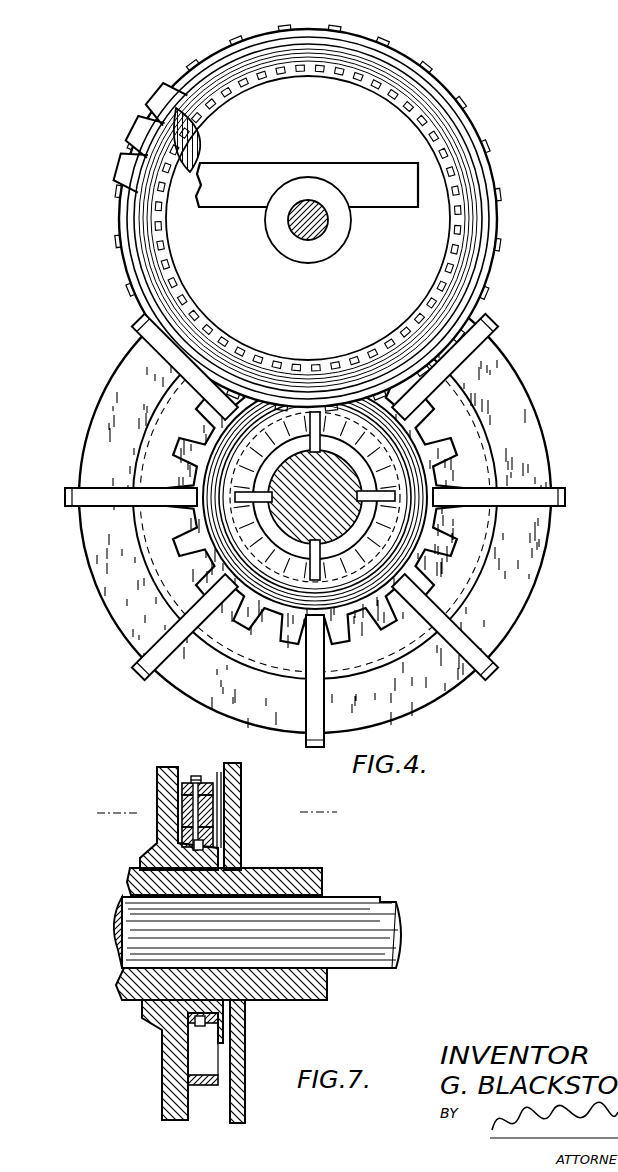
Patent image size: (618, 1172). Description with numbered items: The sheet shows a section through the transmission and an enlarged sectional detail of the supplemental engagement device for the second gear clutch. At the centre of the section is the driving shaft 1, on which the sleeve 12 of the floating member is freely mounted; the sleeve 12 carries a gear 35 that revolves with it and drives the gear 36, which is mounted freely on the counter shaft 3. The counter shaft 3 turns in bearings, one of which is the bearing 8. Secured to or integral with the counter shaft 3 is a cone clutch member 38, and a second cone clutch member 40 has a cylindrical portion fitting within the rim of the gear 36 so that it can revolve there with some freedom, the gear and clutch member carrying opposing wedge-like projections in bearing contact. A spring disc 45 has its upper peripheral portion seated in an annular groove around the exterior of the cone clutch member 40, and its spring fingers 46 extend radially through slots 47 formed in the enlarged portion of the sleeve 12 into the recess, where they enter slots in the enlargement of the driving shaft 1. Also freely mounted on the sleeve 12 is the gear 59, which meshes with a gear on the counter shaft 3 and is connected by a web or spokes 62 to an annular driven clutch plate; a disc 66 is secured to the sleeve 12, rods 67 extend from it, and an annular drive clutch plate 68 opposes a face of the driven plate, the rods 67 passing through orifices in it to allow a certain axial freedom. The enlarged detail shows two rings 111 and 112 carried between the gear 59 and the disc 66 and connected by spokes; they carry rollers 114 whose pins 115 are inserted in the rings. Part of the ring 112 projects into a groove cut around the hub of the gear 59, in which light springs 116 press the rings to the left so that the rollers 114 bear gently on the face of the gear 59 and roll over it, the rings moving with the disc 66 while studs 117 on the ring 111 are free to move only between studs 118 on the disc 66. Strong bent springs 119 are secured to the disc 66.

In FIG. 7, the driving shaft 1 is at (110, 945).
In FIG. 4, the counter shaft 3 is at (322, 228).
In FIG. 7, the bearing 8 is at (215, 813).
In FIG. 4, the sleeve 12 is at (275, 470).
In FIG. 4, the gear 35 is at (407, 537).
In FIG. 4, the gear 36 is at (489, 165).
In FIG. 4, the cone clutch member 38 is at (272, 52).
In FIG. 4, the cone clutch member 40 is at (268, 47).
In FIG. 4, the spring disc 45 is at (348, 393).
In FIG. 4, the spring fingers 46 is at (258, 490).
In FIG. 4, the slots 47 is at (280, 506).
In FIG. 4, the gear 59 is at (173, 483).
In FIG. 7, the gear 59 is at (323, 875).
In FIG. 4, the spokes 62 is at (66, 505).
In FIG. 4, the disc 66 is at (155, 428).
In FIG. 7, the disc 66 is at (246, 1112).
In FIG. 4, the rods 67 is at (160, 413).
In FIG. 4, the annular drive clutch plate 68 is at (527, 440).
In FIG. 7, the ring 111 is at (242, 773).
In FIG. 7, the ring 112 is at (242, 831).
In FIG. 7, the rollers 114 is at (183, 818).
In FIG. 7, the pins 115 is at (180, 816).
In FIG. 7, the light springs 116 is at (242, 845).
In FIG. 7, the studs 117 is at (197, 775).
In FIG. 7, the studs 118 is at (205, 778).
In FIG. 7, the bent springs 119 is at (219, 812).